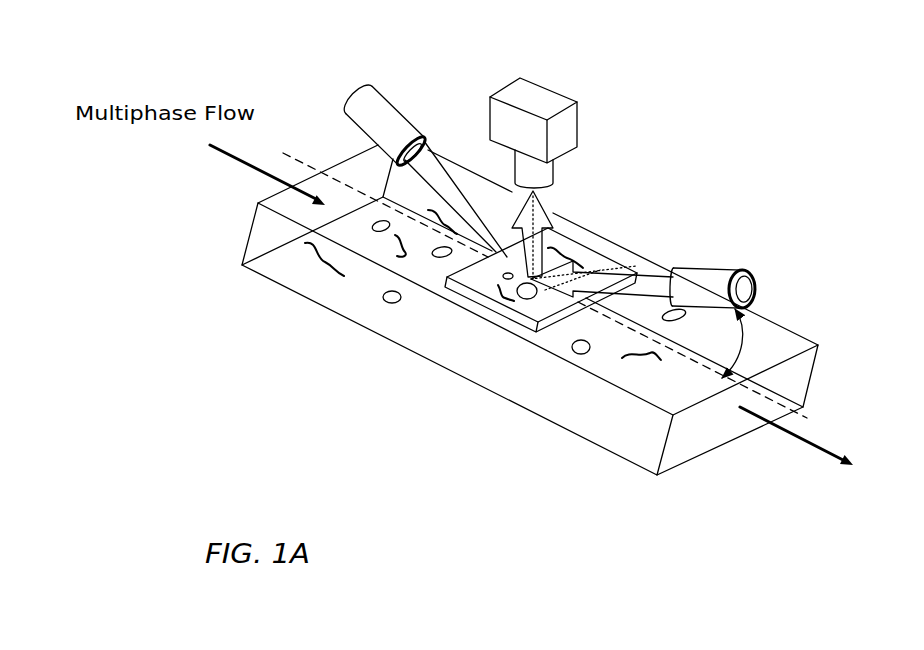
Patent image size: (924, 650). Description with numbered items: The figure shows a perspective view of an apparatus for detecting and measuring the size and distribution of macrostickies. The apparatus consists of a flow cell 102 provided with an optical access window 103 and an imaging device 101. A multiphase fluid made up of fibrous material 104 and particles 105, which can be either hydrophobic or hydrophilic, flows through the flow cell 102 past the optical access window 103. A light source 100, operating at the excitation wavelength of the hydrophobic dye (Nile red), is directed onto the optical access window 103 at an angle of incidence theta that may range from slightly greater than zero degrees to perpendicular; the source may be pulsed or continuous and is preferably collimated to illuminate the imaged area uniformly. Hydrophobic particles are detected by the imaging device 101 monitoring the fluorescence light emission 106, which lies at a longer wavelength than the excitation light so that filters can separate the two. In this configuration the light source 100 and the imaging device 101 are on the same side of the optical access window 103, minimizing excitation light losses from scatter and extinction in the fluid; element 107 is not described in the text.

The light source 100 is at (380, 108).
The imaging device 101 is at (538, 100).
The flow cell 102 is at (642, 252).
The optical access window 103 is at (562, 237).
The fibrous material 104 is at (518, 208).
The particles 105 is at (317, 275).
The fluorescence light emission 106 is at (392, 307).
The liquid droplet 107 is at (528, 302).